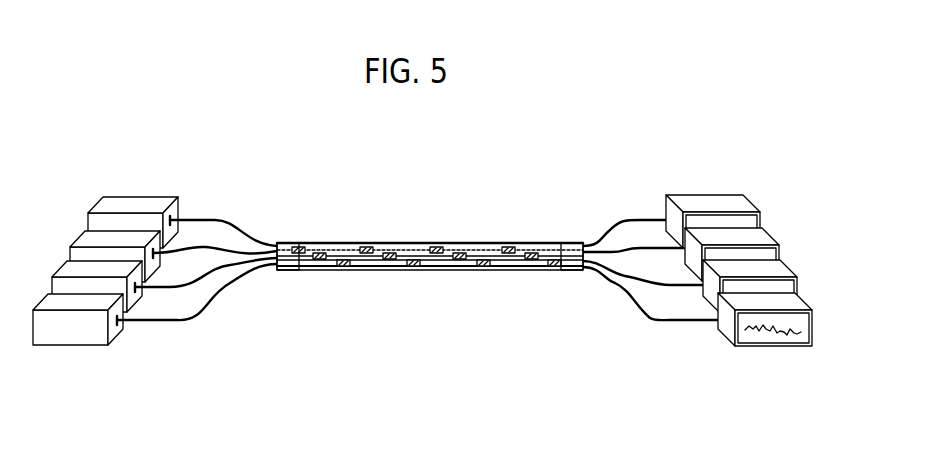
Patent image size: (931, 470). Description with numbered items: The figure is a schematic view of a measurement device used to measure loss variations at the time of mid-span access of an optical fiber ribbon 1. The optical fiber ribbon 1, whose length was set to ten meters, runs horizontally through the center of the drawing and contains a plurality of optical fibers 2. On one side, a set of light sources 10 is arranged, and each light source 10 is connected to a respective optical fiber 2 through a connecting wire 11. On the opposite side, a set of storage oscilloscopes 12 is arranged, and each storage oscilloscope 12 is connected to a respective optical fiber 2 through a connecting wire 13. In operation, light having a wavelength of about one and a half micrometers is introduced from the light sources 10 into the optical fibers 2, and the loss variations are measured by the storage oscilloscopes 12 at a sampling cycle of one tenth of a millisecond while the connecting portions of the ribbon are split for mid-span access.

The optical fiber ribbon 1 is at (422, 239).
The optical fiber 2 is at (284, 242).
The light source 10 is at (137, 203).
The connecting wire 11 is at (212, 217).
The storage oscilloscope 12 is at (707, 197).
The connecting wire 13 is at (629, 215).